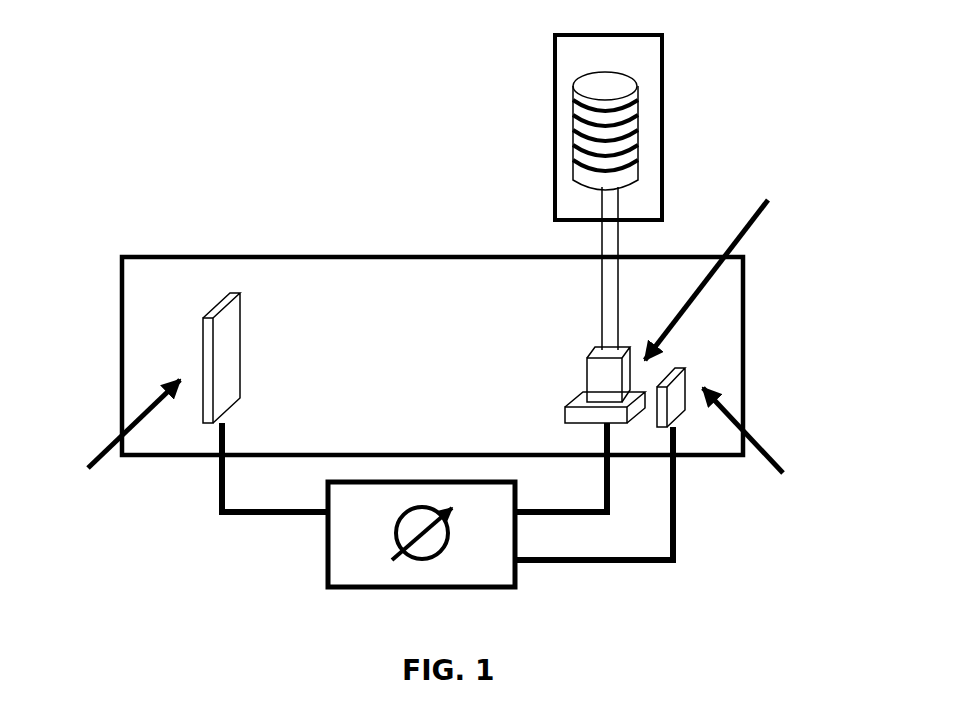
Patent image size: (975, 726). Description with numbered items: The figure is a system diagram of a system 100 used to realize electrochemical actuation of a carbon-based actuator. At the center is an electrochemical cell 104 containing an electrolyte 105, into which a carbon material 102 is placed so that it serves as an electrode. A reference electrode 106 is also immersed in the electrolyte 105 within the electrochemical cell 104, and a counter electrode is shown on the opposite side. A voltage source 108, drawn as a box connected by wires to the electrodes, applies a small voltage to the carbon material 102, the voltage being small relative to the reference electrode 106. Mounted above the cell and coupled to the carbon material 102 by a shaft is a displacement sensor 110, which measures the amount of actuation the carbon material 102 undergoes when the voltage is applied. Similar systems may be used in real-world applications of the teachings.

The system 100 is at (205, 103).
The carbon material 102 is at (587, 378).
The electrochemical cell 104 is at (120, 300).
The electrolyte 105 is at (142, 378).
The reference electrode 106 is at (687, 372).
The voltage source 108 is at (517, 574).
The displacement sensor 110 is at (662, 72).